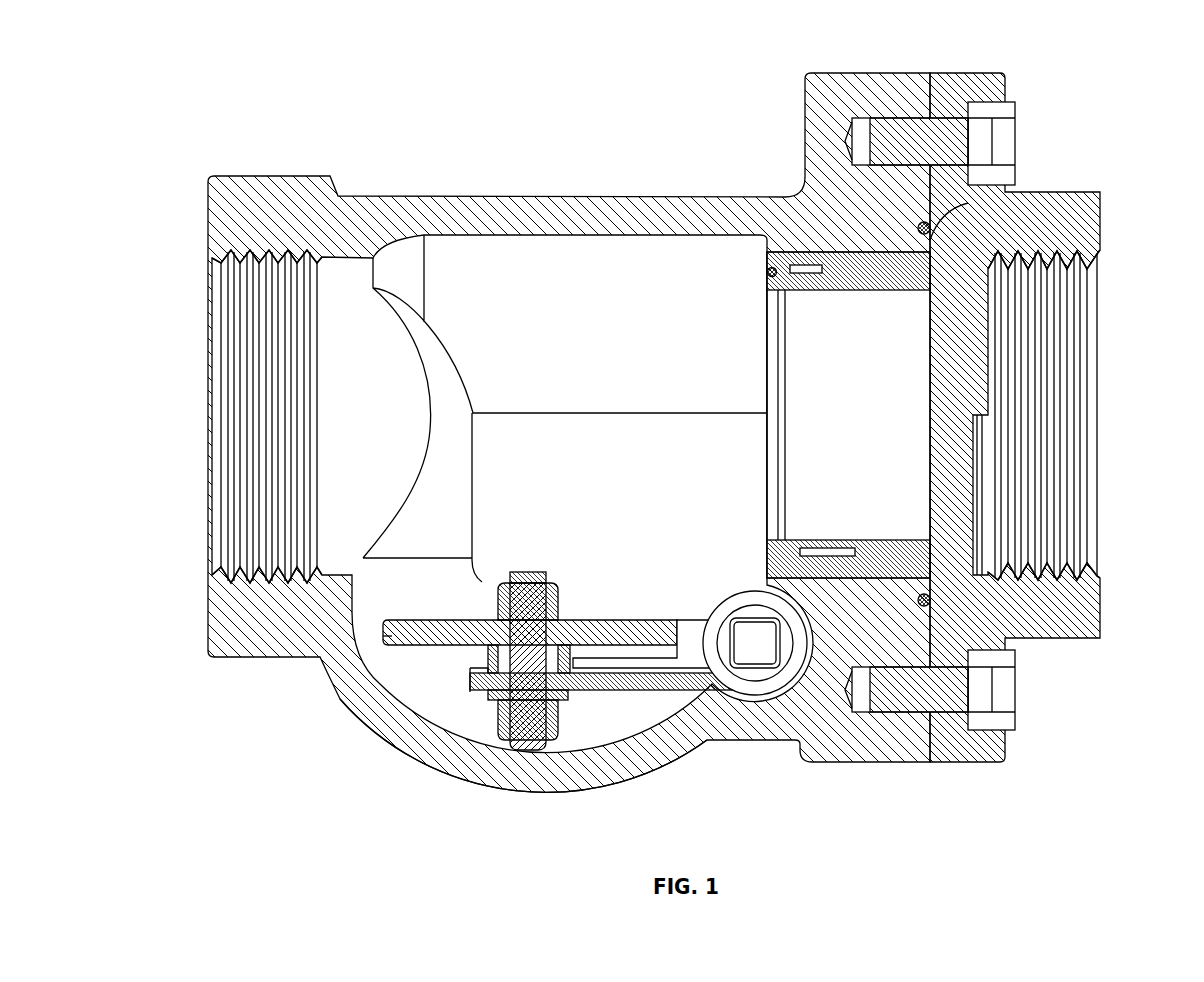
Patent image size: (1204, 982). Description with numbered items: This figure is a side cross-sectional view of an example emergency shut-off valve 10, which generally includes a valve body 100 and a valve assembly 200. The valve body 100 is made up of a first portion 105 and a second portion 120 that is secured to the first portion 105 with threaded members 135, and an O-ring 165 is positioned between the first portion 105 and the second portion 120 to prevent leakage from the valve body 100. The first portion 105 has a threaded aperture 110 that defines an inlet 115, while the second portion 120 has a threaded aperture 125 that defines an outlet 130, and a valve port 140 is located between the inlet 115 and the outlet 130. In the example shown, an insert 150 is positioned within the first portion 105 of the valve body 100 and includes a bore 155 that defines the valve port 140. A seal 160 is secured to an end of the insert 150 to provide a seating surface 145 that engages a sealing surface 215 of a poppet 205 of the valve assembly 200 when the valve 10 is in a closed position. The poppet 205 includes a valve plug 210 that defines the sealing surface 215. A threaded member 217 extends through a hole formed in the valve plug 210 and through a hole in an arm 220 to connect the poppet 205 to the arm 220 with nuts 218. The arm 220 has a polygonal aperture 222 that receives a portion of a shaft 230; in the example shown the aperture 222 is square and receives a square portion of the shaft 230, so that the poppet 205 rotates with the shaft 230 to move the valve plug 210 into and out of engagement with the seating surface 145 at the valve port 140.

The emergency shut-off valve 10 is at (272, 74).
The valve body 100 is at (764, 140).
The first portion 105 is at (512, 205).
The threaded aperture 110 is at (238, 256).
The inlet 115 is at (206, 424).
The second portion 120 is at (985, 752).
The threaded aperture 125 is at (1090, 248).
The outlet 130 is at (1108, 396).
The threaded members 135 is at (1000, 118).
The valve port 140 is at (797, 362).
The seating surface 145 is at (767, 268).
The insert 150 is at (850, 552).
The bore 155 is at (818, 530).
The seal 160 is at (790, 250).
The O-ring 165 is at (1012, 177).
The valve assembly 200 is at (713, 686).
The poppet 205 is at (413, 710).
The valve plug 210 is at (390, 638).
The sealing surface 215 is at (616, 616).
The threaded member 217 is at (527, 575).
The nuts 218 is at (497, 612).
The arm 220 is at (659, 702).
The polygonal aperture 222 is at (808, 688).
The shaft 230 is at (747, 632).